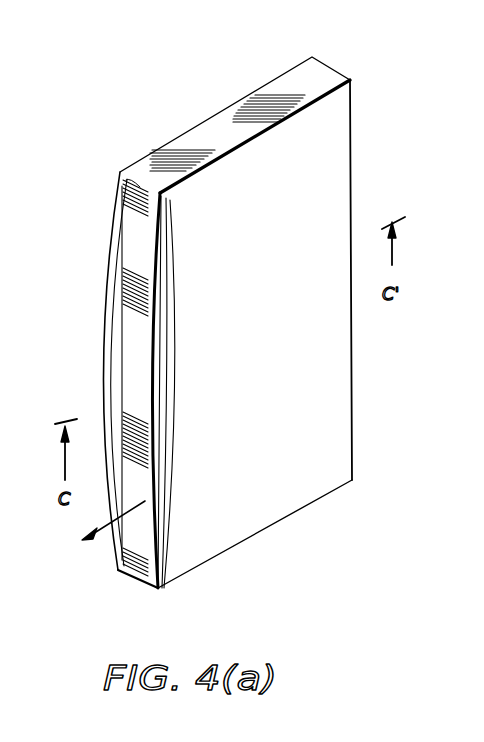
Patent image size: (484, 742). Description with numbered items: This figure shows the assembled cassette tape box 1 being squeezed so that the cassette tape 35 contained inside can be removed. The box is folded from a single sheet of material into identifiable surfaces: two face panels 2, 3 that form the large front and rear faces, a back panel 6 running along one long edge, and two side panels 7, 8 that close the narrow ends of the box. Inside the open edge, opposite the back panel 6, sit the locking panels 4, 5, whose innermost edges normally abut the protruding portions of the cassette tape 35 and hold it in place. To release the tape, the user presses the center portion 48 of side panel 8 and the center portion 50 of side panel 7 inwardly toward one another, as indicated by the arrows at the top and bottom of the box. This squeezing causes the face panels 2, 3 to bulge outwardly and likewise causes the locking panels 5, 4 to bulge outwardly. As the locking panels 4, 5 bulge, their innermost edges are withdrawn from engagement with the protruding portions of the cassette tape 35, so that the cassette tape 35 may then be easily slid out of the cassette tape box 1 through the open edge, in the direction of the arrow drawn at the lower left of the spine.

The cassette tape box 1 is at (372, 117).
The face panel 2 is at (112, 250).
The face panel 3 is at (340, 421).
The locking panel 4 is at (170, 376).
The locking panel 5 is at (120, 372).
The back panel 6 is at (352, 166).
The side panel 7 is at (135, 577).
The side panel 8 is at (288, 82).
The cassette tape 35 is at (123, 292).
The center portion 48 is at (203, 148).
The center portion 50 is at (205, 565).